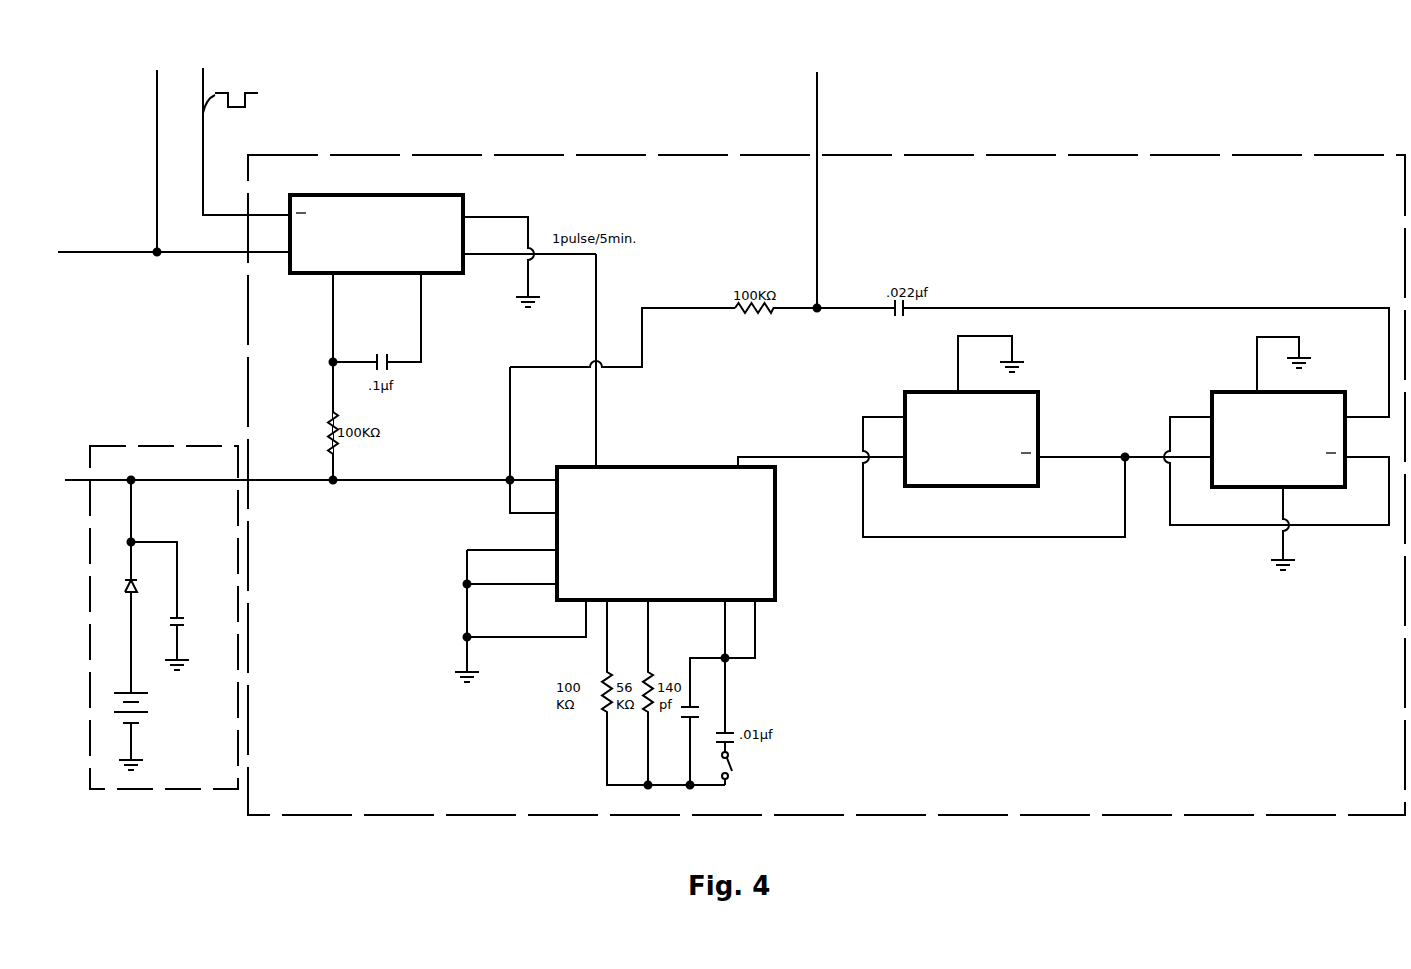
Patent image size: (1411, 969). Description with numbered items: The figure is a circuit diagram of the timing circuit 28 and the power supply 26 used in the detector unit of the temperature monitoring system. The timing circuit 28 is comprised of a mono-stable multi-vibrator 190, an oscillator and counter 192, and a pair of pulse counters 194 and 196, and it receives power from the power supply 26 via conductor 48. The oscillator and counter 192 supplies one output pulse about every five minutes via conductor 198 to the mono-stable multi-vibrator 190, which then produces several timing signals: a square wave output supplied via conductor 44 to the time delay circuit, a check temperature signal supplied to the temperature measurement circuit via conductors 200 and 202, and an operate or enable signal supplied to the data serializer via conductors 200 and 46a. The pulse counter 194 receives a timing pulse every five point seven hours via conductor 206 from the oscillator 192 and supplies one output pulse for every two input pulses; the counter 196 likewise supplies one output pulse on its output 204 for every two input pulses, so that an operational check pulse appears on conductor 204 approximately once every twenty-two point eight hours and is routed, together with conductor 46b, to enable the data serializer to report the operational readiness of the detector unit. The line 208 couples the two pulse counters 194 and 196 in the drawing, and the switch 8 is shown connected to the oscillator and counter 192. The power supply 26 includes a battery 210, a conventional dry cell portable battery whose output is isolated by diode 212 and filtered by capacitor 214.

The switch 8 is at (737, 768).
The power supply 26 is at (195, 790).
The timing circuit 28 is at (1198, 816).
The conductor 44 is at (235, 128).
The conductor 46a is at (157, 212).
The data serializer connection 46b is at (817, 228).
The conductor 48 is at (170, 483).
The mono-stable multi-vibrator 190 is at (440, 275).
The oscillator and counter 192 is at (777, 545).
The pulse counter 194 is at (985, 487).
The pulse counter 196 is at (1244, 488).
The conductor 198 is at (598, 400).
The conductor 200 is at (236, 254).
The conductor 202 is at (76, 254).
The conductor 204 is at (1091, 310).
The conductor 206 is at (783, 457).
The flip-flop interconnection line 208 is at (1084, 457).
The battery 210 is at (155, 706).
The diode 212 is at (162, 568).
The capacitor 214 is at (183, 622).